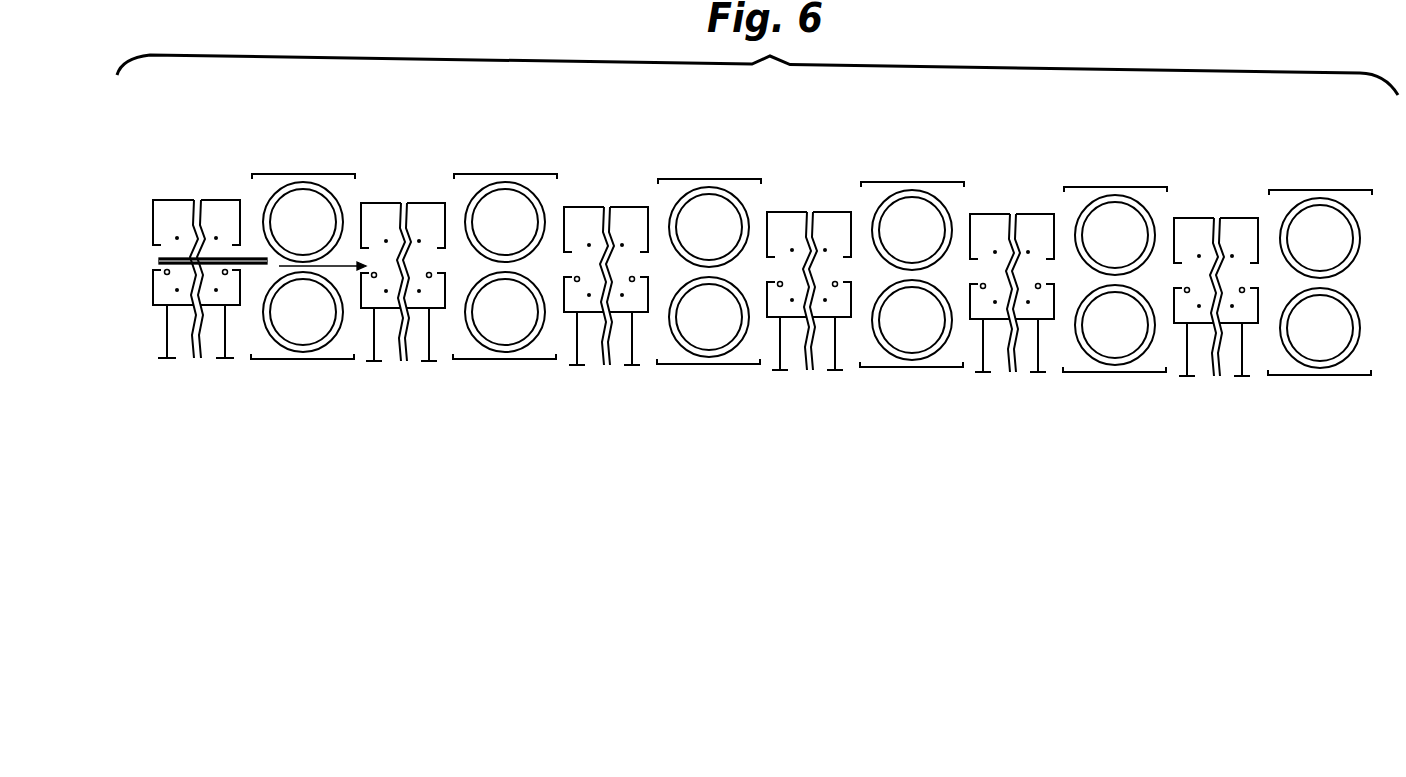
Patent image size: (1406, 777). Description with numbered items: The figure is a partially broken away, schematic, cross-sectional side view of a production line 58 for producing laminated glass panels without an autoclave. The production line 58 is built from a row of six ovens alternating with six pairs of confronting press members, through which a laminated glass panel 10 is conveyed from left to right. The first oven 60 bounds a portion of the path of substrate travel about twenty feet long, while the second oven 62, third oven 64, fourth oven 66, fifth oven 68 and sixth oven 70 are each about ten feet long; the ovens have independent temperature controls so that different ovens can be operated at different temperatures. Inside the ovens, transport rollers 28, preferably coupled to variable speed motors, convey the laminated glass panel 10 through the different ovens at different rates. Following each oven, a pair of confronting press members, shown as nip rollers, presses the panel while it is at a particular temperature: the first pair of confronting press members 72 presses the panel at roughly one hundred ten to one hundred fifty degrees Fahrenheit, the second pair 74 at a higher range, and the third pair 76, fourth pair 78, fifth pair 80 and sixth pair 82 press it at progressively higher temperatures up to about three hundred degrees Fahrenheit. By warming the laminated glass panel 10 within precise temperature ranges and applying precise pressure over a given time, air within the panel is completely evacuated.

The laminated glass panel 10 is at (250, 259).
The transport rollers 28 is at (167, 274).
The production line 58 is at (634, 124).
The first oven 60 is at (172, 200).
The second oven 62 is at (373, 203).
The third oven 64 is at (578, 207).
The fourth oven 66 is at (783, 212).
The fifth oven 68 is at (988, 214).
The sixth oven 70 is at (1190, 218).
The first pair of confronting press members 72 is at (302, 182).
The second pair of confronting press members 74 is at (498, 182).
The third pair of confronting press members 76 is at (709, 187).
The fourth pair of confronting press members 78 is at (912, 190).
The fifth pair of confronting press members 80 is at (1115, 190).
The sixth pair of confronting press members 82 is at (1320, 198).